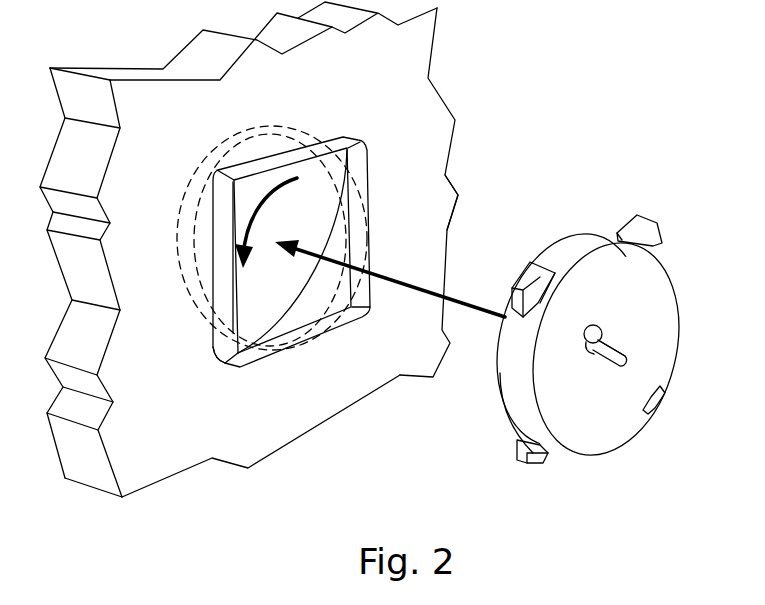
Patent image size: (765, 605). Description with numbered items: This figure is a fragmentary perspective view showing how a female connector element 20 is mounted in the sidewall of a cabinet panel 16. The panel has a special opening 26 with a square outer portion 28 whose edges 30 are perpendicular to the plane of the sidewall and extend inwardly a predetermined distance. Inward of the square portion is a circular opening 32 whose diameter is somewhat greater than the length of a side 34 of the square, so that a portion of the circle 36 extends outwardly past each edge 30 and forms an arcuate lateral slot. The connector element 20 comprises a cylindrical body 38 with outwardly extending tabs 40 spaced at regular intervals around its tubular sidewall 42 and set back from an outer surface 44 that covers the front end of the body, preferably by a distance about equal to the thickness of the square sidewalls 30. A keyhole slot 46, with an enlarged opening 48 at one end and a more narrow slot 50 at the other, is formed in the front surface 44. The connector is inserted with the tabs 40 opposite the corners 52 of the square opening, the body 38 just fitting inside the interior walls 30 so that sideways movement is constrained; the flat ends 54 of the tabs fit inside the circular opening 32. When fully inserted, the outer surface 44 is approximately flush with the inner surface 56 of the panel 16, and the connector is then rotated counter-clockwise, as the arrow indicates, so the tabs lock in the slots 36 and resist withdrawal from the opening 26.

The panel 16 is at (408, 64).
The connector element 20 is at (572, 329).
The opening 26 is at (372, 163).
The square outer portion 28 is at (330, 345).
The edges 30 is at (297, 157).
The circular opening 32 is at (282, 126).
The side 34 is at (235, 332).
The portion of the circle 36 is at (262, 128).
The cylindrical body 38 is at (515, 402).
The tabs 40 is at (511, 270).
The tubular sidewall 42 is at (510, 372).
The outer surface 44 is at (633, 288).
The keyhole slot 46 is at (630, 339).
The enlarged opening 48 is at (587, 352).
The narrow slot 50 is at (612, 367).
The corners 52 is at (233, 202).
The ends of the tabs 54 is at (540, 300).
The inner surface 56 is at (423, 190).